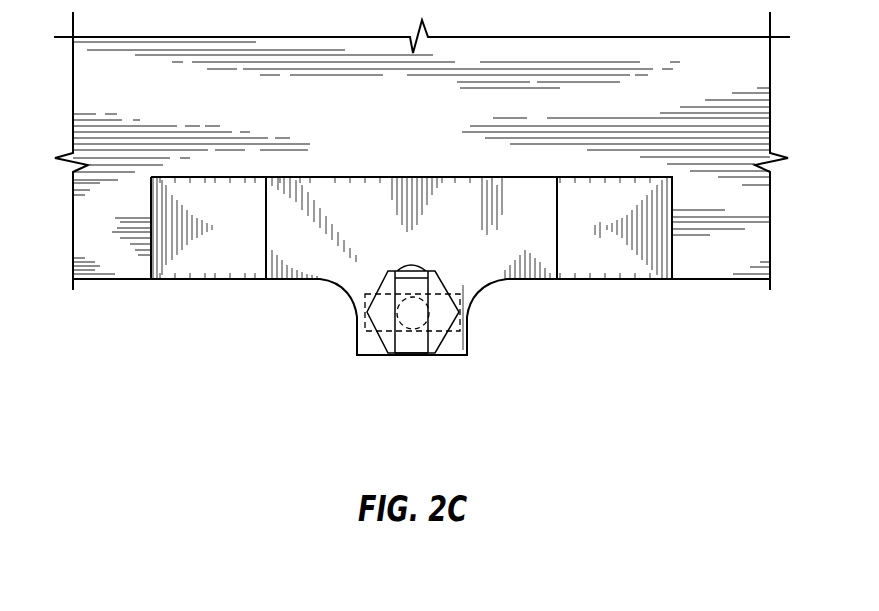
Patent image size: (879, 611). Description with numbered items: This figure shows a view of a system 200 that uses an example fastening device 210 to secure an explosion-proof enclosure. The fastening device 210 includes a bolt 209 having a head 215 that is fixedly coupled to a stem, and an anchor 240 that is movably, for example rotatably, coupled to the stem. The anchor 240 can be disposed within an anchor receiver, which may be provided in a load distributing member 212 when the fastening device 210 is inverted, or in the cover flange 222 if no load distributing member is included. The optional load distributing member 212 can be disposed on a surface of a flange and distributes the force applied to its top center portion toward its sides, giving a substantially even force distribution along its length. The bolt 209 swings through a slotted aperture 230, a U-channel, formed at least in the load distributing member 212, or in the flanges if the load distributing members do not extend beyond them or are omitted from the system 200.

The system 200 is at (187, 418).
The cover flange 222 is at (118, 273).
The load distributing member 212 is at (228, 267).
The fastening device 210 is at (490, 330).
The bolt 209 is at (395, 373).
The slotted aperture 230 is at (412, 267).
The anchor 240 is at (363, 311).
The head 215 is at (413, 355).